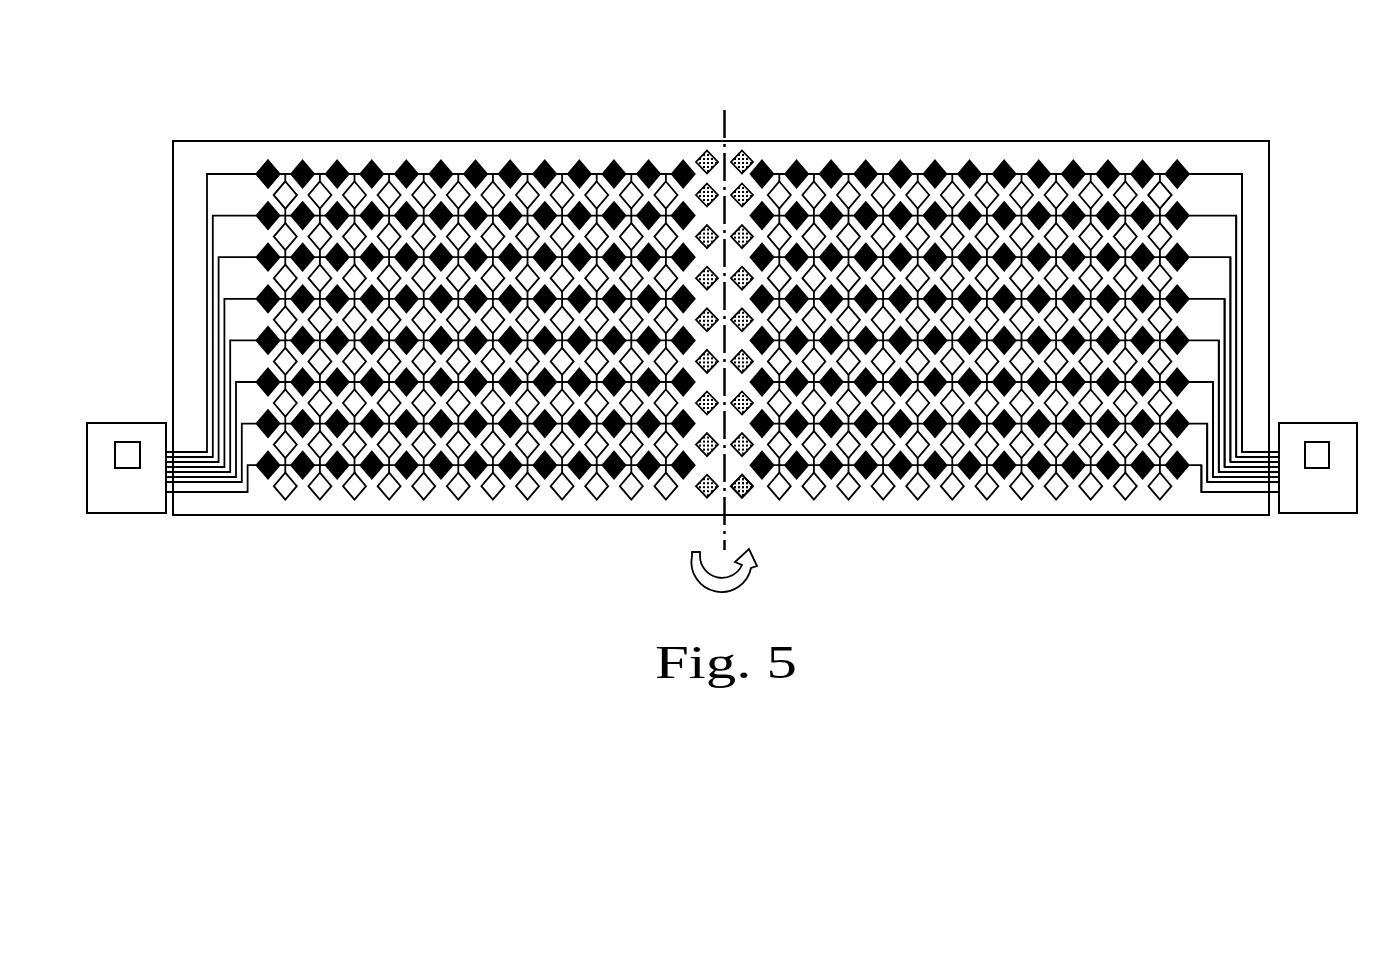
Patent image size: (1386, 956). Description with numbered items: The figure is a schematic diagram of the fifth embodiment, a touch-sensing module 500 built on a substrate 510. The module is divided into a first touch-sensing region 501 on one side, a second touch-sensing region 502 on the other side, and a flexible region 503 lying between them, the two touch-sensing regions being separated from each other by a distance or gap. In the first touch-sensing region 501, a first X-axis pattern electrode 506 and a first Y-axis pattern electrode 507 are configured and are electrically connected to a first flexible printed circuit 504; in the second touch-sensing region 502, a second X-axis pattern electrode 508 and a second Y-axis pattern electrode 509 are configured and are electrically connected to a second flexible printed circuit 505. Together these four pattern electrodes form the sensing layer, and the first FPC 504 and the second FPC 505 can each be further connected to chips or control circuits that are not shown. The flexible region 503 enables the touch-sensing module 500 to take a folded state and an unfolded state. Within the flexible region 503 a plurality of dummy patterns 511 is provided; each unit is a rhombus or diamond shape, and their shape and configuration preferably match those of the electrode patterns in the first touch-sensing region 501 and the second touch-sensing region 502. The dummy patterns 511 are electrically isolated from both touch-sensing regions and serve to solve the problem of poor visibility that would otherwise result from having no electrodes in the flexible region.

The touch-sensing module 500 is at (1015, 592).
The first touch-sensing region 501 is at (697, 128).
The second touch-sensing region 502 is at (1190, 128).
The flexible region 503 is at (753, 99).
The first flexible printed circuit 504 is at (130, 498).
The second flexible printed circuit 505 is at (1300, 503).
The first X-axis pattern electrode 506 is at (262, 168).
The first Y-axis pattern electrode 507 is at (284, 195).
The second X-axis pattern electrode 508 is at (1184, 169).
The second Y-axis pattern electrode 509 is at (1162, 195).
The substrate 510 is at (1253, 378).
The dummy patterns 511 is at (752, 488).